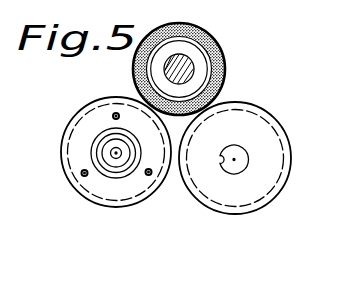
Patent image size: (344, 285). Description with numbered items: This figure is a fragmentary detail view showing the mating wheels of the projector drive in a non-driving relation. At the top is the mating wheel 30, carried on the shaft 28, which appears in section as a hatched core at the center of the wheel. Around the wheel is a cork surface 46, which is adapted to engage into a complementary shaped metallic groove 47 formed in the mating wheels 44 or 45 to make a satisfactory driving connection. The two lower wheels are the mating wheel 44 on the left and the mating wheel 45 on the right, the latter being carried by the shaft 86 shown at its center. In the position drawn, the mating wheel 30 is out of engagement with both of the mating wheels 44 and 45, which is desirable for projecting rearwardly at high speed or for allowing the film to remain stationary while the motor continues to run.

The mating wheel 44 is at (88, 96).
The mating wheel 45 is at (247, 156).
The metallic groove 47 is at (208, 203).
The cork surface 46 is at (192, 57).
The shaft 28 is at (186, 62).
The twin mating wheels 30 is at (221, 62).
The shaft 86 is at (252, 137).